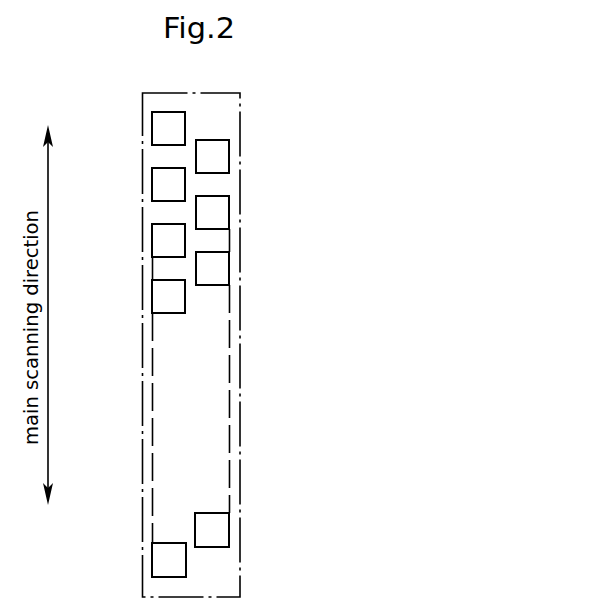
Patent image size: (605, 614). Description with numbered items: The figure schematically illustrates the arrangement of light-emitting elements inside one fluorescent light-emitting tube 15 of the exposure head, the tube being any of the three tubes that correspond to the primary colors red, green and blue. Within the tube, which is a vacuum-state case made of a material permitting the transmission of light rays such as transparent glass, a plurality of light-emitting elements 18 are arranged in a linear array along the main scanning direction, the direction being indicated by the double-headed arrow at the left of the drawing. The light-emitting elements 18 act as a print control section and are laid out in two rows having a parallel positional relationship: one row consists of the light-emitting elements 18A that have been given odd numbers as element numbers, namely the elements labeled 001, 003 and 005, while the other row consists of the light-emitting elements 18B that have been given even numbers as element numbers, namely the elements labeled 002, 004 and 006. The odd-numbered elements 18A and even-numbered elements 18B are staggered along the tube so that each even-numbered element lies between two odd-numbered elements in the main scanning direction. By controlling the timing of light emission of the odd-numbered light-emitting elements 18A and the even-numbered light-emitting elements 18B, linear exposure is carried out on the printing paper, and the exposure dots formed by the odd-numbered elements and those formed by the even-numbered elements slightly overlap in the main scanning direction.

The fluorescent light-emitting tube 15 is at (306, 345).
The light-emitting element 18 is at (209, 354).
The odd-numbered light-emitting element 18A is at (126, 344).
The even-numbered light-emitting element 18B is at (274, 355).
The element number 001 is at (168, 131).
The element number 002 is at (224, 160).
The element number 003 is at (168, 187).
The element number 004 is at (223, 203).
The element number 005 is at (135, 240).
The element number 006 is at (223, 274).